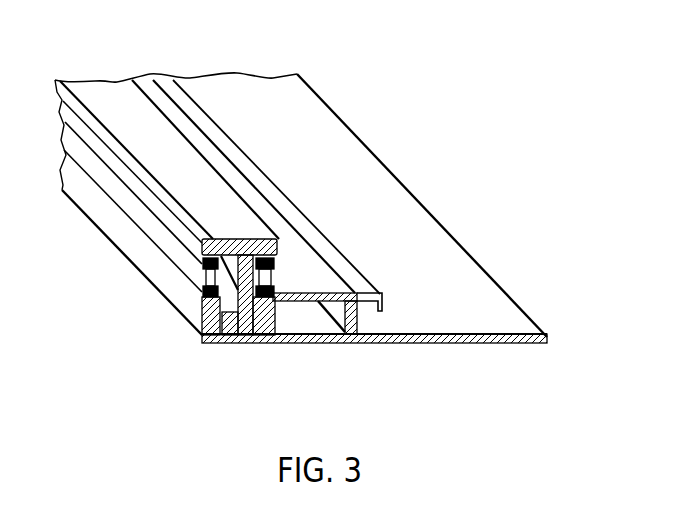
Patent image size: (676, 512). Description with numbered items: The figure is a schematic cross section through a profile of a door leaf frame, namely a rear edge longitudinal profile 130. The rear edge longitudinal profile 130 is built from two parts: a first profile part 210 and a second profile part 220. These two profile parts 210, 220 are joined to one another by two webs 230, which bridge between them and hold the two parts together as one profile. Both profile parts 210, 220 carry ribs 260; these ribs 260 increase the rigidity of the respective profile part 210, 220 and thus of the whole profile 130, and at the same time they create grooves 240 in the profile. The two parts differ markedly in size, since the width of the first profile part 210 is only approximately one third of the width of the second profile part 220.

The rear edge longitudinal profile 130 is at (430, 85).
The first profile part 210 is at (110, 103).
The second profile part 220 is at (548, 338).
The web 230 is at (205, 277).
The groove 240 is at (370, 319).
The rib 260 is at (267, 343).